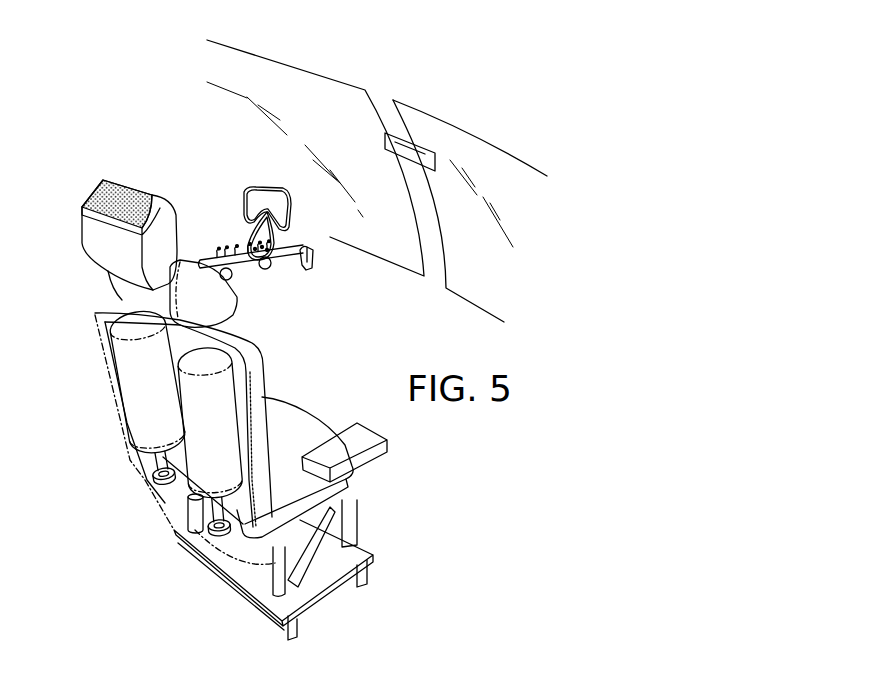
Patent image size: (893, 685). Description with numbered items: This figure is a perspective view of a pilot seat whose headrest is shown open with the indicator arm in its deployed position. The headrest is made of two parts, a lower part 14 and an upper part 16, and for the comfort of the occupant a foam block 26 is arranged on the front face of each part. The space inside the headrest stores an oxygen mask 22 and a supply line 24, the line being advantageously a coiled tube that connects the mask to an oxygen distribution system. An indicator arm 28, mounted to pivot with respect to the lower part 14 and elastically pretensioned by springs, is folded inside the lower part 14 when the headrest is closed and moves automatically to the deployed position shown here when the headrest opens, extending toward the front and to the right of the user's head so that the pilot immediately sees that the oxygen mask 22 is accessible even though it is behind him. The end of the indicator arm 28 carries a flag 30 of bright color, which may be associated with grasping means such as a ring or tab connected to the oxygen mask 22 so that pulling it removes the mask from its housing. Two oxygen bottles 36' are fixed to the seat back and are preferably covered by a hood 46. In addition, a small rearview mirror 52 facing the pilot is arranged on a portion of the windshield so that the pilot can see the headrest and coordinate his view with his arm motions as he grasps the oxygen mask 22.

The lower part 14 is at (122, 288).
The upper part 16 is at (94, 232).
The oxygen mask 22 is at (275, 203).
The supply line 24 is at (227, 253).
The foam block 26 is at (106, 198).
The indicator arm 28 is at (276, 262).
The flag 30 is at (312, 268).
The oxygen bottle 36' is at (156, 422).
The hood 46 is at (143, 482).
The rearview mirror 52 is at (393, 144).